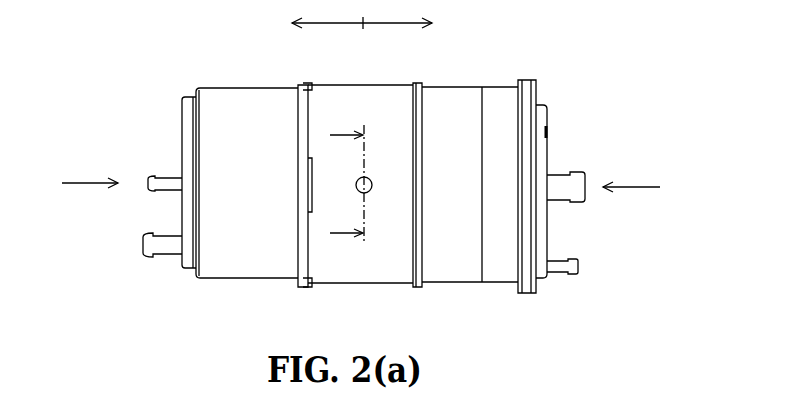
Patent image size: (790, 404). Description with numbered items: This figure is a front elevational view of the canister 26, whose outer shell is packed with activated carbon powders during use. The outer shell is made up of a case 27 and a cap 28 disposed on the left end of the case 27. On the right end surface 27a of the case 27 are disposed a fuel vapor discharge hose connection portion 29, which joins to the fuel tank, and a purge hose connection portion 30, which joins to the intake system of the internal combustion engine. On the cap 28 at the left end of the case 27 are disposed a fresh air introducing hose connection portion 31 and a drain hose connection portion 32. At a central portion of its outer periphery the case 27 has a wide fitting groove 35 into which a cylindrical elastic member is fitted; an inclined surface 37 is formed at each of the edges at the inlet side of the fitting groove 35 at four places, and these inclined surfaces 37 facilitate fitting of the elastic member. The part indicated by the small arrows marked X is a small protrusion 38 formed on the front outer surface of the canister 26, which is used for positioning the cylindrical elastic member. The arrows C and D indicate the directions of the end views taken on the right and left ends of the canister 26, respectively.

The canister 26 is at (160, 47).
The case 27 is at (455, 81).
The right end surface 27a is at (182, 115).
The cap 28 is at (541, 118).
The fuel vapor discharge hose connection portion 29 is at (165, 175).
The purge hose connection portion 30 is at (170, 258).
The fresh air introducing hose connection portion 31 is at (565, 172).
The drain hose connection portion 32 is at (563, 275).
The fitting groove 35 is at (355, 85).
The inclined surface 37 is at (297, 80).
The small protrusion 38 is at (370, 191).